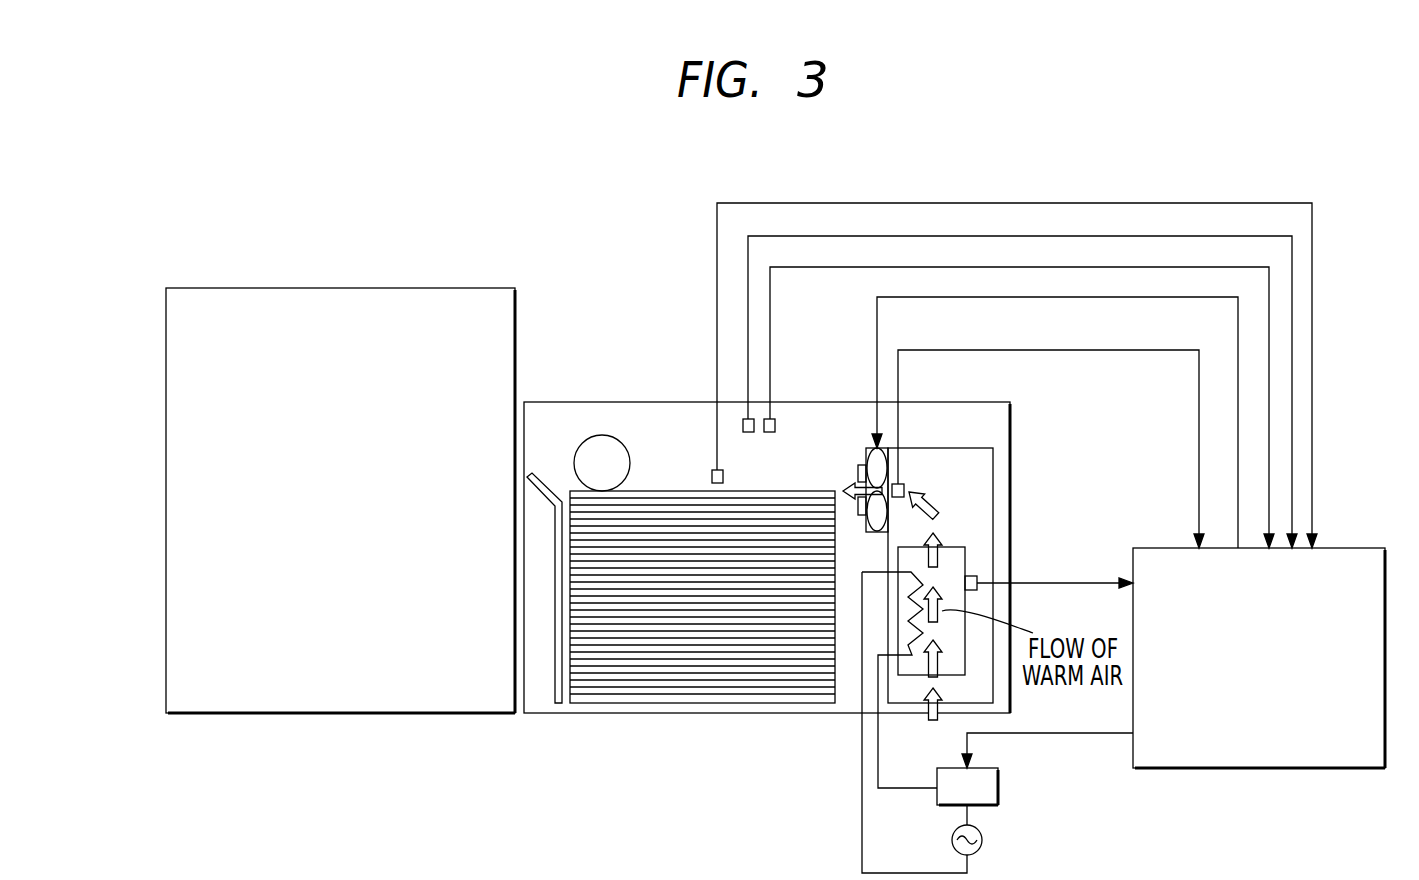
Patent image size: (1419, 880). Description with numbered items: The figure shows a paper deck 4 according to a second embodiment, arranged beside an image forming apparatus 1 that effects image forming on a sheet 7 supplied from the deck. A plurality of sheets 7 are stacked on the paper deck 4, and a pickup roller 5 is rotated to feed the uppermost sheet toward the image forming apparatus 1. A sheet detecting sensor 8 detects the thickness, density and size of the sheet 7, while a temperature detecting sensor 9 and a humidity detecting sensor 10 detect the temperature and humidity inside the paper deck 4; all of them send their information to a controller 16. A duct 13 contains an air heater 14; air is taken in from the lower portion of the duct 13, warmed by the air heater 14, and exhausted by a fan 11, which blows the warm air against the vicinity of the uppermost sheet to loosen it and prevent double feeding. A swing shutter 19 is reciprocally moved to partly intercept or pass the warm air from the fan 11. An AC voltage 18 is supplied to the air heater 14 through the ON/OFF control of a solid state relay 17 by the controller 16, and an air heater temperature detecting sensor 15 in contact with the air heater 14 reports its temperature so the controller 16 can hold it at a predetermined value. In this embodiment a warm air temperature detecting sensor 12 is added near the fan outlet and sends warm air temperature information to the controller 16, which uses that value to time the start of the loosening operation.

The image forming apparatus 1 is at (218, 288).
The paper deck 4 is at (550, 713).
The pickup roller 5 is at (600, 436).
The sheet 7 is at (700, 690).
The sheet detecting sensor 8 is at (712, 470).
The temperature detecting sensor 9 is at (745, 419).
The humidity detecting sensor 10 is at (770, 419).
The fan 11 is at (866, 449).
The warm air temperature detecting sensor 12 is at (904, 485).
The duct 13 is at (994, 453).
The air heater 14 is at (957, 547).
The air heater temperature detecting sensor 15 is at (977, 577).
The controller 16 is at (1360, 548).
The solid state relay (SSR) 17 is at (998, 786).
The AC voltage 18 is at (983, 840).
The swing shutter 19 is at (862, 516).